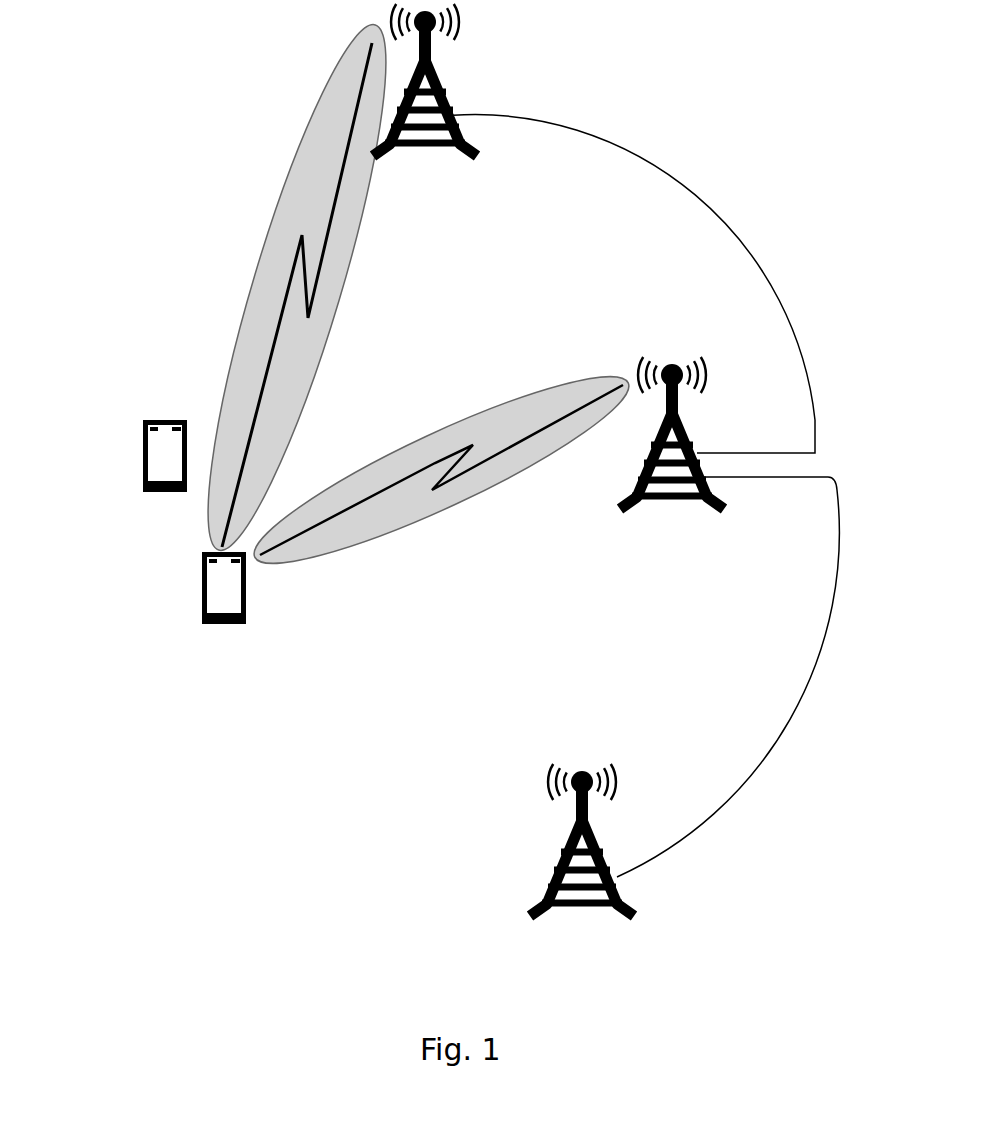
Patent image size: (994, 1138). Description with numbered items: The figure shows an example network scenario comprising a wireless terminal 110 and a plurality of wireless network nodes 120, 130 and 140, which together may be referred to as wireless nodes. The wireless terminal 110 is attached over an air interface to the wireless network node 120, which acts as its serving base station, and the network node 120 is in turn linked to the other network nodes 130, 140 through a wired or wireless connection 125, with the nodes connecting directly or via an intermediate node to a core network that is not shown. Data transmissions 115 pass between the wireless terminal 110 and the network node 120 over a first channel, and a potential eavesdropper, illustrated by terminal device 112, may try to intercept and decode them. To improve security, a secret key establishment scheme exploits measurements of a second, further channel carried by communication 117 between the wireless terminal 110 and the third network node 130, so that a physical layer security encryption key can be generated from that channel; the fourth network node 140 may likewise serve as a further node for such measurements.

The wireless terminal 110 is at (247, 614).
The terminal device 112 is at (143, 490).
The data transmissions 115 is at (435, 463).
The communication 117 is at (300, 268).
The wireless network node 120 is at (712, 490).
The wired or wireless connection 125 is at (697, 198).
The wireless network node 130 is at (473, 140).
The wireless network node 140 is at (615, 880).